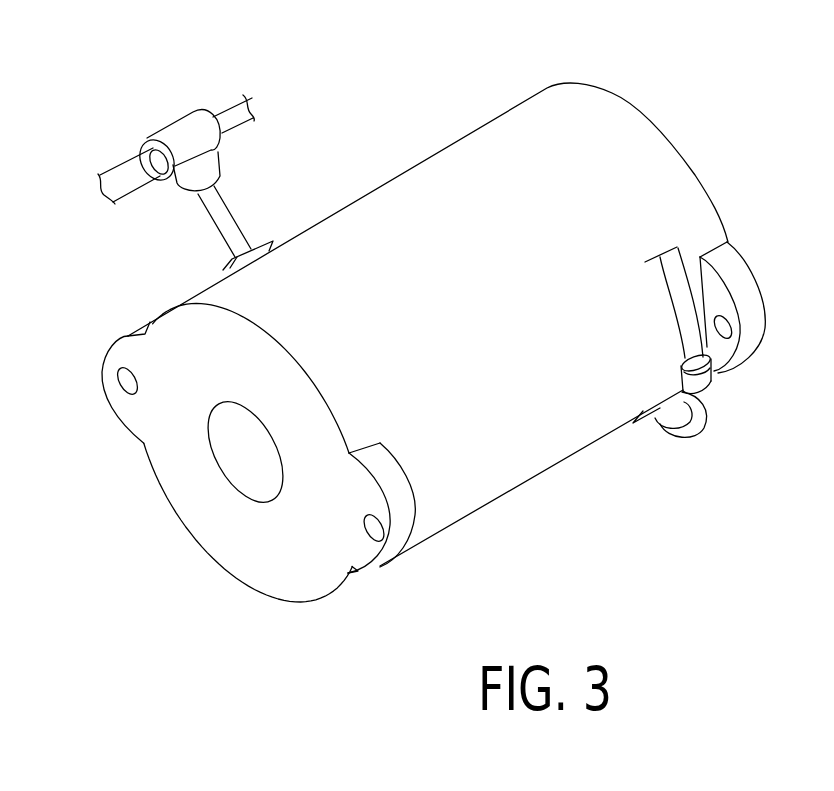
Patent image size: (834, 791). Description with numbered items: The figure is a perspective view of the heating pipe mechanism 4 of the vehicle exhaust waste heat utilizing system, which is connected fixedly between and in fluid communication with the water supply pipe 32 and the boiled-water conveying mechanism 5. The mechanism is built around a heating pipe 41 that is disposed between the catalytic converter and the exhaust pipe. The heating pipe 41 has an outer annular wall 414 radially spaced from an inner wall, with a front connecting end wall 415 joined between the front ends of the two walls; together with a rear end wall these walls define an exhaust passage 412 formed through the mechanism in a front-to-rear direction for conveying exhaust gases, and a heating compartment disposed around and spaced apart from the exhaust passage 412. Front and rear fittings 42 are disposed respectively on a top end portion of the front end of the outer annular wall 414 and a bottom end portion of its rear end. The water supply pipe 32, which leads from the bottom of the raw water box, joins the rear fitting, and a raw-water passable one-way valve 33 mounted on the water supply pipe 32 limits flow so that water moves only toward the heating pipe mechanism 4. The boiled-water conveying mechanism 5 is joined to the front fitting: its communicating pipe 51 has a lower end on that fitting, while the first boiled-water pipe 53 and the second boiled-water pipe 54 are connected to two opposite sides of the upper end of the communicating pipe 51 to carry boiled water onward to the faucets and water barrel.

The heating pipe mechanism 4 is at (452, 132).
The heating pipe 41 is at (510, 127).
The exhaust passage 412 is at (248, 470).
The outer annular wall 414 is at (548, 403).
The front connecting end wall 415 is at (305, 540).
The front and rear fittings 42 is at (253, 243).
The boiled-water conveying mechanism 5 is at (155, 113).
The communicating pipe 51 is at (218, 222).
The first boiled-water pipe 53 is at (128, 179).
The second boiled-water pipe 54 is at (237, 119).
The water supply pipe 32 is at (679, 293).
The raw-water passable one-way valve 33 is at (706, 381).